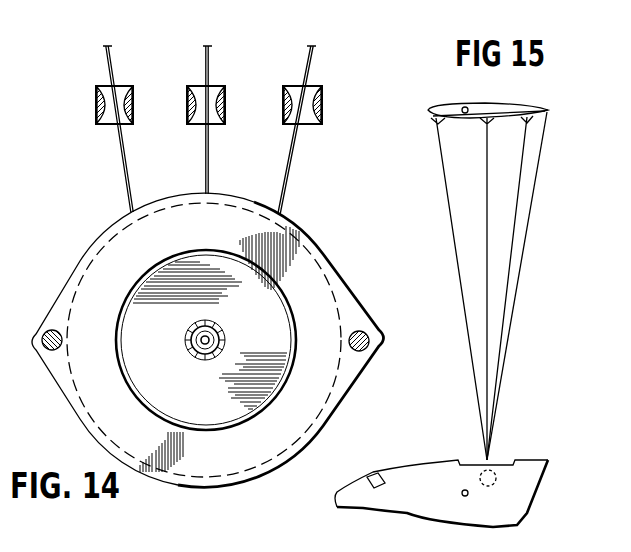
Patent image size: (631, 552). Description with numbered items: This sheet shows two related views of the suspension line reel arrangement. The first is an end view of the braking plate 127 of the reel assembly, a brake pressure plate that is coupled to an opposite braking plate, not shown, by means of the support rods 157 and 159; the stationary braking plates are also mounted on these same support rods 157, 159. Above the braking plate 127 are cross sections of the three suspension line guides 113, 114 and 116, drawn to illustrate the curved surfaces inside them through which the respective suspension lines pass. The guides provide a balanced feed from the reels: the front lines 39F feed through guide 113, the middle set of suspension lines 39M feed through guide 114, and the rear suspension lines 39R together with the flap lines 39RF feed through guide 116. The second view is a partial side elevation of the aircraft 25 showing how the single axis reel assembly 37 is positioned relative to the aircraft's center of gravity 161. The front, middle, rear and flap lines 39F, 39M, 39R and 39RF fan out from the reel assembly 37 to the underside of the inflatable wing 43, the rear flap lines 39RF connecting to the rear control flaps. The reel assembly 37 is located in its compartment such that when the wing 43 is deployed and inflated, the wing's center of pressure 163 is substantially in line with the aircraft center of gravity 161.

In FIG. 15, the housing body 25 is at (388, 504).
In FIG. 15, the reel assembly 37 is at (502, 482).
In FIG. 14, the rear suspension lines 39R is at (115, 48).
In FIG. 15, the rear suspension lines 39R is at (528, 141).
In FIG. 14, the middle suspension lines 39M is at (211, 48).
In FIG. 15, the middle suspension lines 39M is at (487, 150).
In FIG. 14, the front suspension lines 39F is at (317, 49).
In FIG. 15, the front suspension lines 39F is at (437, 149).
In FIG. 15, the flap lines 39RF is at (538, 180).
In FIG. 15, the wing 43 is at (506, 107).
In FIG. 14, the suspension line guide 113 is at (323, 105).
In FIG. 14, the suspension line guide 114 is at (226, 105).
In FIG. 14, the suspension line guide 116 is at (96, 106).
In FIG. 14, the braking plate 127 is at (305, 262).
In FIG. 14, the support rod 157 is at (48, 330).
In FIG. 14, the support rod 159 is at (365, 331).
In FIG. 15, the aircraft center of gravity 161 is at (462, 491).
In FIG. 15, the center of pressure 163 is at (466, 106).